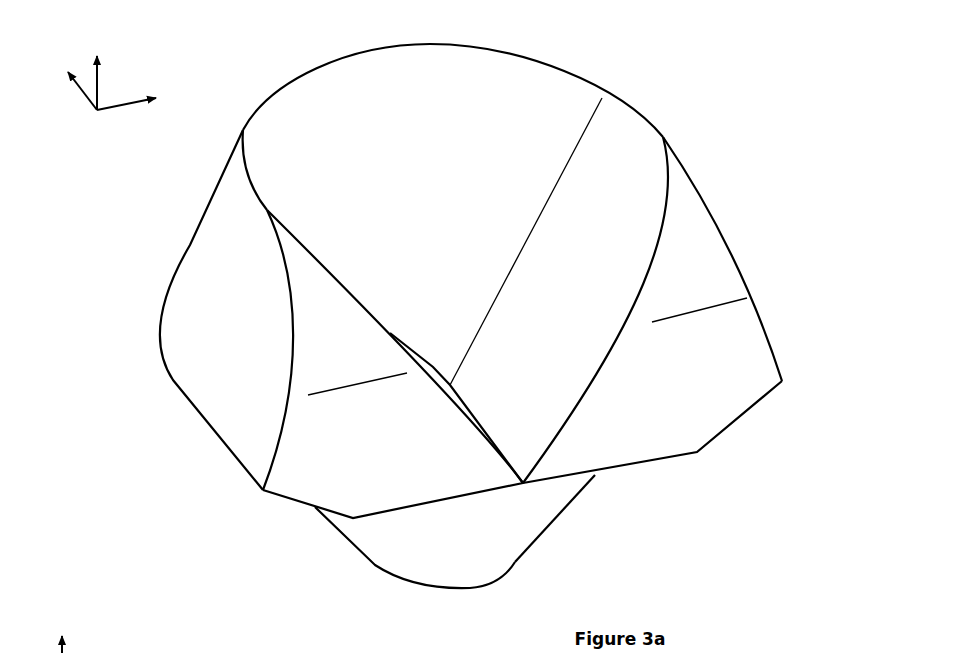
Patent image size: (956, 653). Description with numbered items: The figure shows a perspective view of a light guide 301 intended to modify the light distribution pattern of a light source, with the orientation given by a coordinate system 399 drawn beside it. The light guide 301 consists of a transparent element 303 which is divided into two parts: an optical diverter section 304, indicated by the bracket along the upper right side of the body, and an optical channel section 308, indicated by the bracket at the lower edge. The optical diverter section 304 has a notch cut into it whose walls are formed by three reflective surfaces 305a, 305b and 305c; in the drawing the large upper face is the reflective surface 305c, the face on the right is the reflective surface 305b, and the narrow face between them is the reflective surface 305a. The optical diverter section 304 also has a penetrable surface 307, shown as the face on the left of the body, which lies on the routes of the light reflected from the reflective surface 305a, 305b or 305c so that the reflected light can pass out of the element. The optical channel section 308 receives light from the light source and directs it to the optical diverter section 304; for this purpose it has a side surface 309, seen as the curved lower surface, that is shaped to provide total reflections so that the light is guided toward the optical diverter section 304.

The light guide 301 is at (268, 70).
The transparent element 303 is at (198, 383).
The optical diverter section 304 is at (784, 21).
The reflective surface 305a is at (438, 373).
The reflective surface 305b is at (558, 298).
The reflective surface 305c is at (450, 165).
The penetrable surface 307 is at (255, 311).
The optical channel section 308 is at (536, 594).
The side surface 309 is at (325, 533).
The coordinate system 399 is at (147, 86).